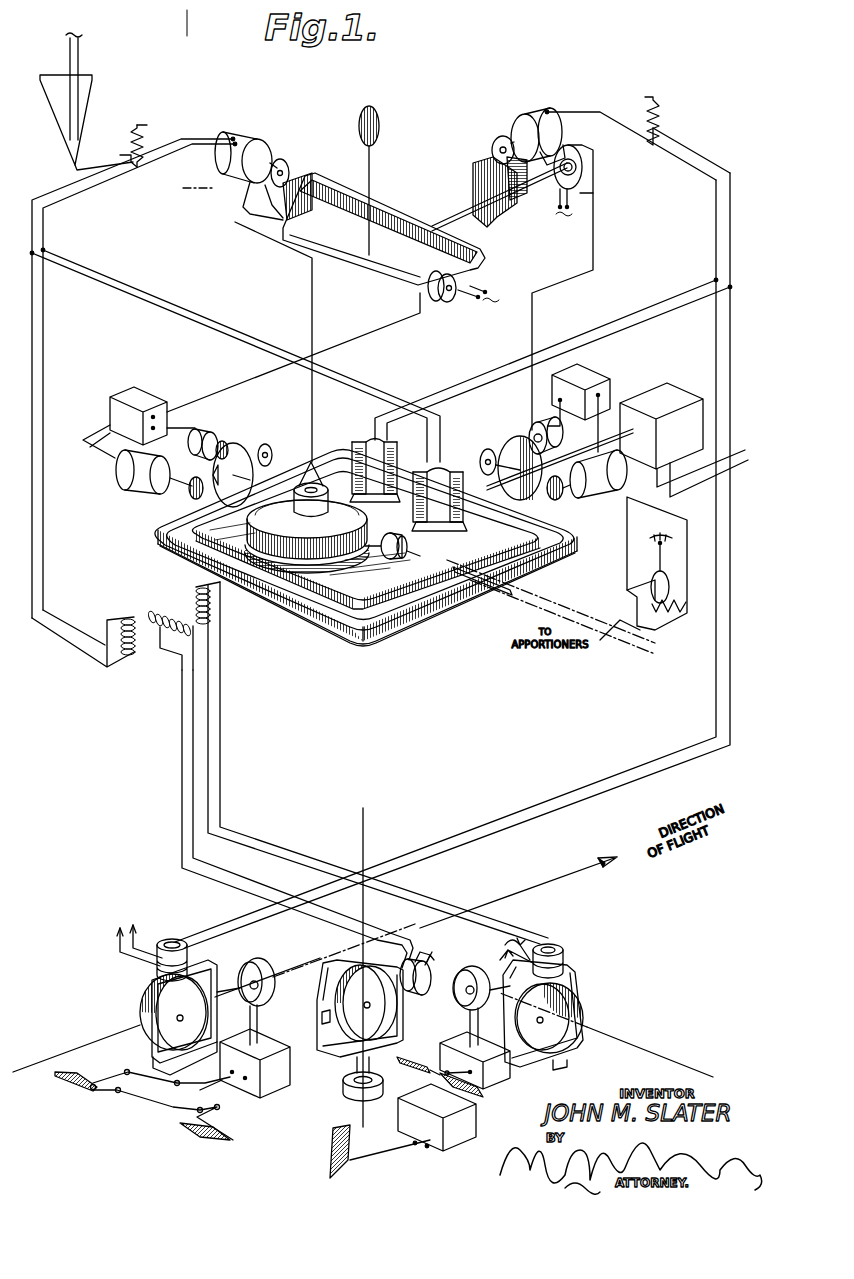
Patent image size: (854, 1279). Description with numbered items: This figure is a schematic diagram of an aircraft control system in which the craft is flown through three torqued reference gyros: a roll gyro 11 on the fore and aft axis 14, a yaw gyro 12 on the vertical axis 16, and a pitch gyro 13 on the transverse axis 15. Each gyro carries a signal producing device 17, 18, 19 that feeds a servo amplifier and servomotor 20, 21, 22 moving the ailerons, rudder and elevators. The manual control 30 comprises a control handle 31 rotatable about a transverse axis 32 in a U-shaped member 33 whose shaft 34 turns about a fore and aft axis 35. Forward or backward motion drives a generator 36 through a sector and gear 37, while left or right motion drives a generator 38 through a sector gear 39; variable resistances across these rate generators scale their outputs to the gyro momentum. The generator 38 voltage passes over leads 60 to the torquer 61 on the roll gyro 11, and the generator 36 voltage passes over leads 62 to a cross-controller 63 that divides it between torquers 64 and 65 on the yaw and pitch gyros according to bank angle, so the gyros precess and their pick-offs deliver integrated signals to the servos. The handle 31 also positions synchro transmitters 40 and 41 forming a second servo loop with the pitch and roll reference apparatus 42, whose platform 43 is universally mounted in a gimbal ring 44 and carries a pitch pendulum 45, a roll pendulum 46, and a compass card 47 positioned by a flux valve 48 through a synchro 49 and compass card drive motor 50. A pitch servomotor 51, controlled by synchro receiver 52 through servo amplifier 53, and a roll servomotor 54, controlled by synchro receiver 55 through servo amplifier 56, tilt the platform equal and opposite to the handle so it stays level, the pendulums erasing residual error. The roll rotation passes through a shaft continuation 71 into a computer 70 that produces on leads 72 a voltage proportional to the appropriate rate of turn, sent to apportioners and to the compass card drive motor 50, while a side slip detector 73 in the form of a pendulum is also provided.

The roll gyro 11 is at (145, 992).
The yaw gyro 12 is at (335, 965).
The pitch gyro 13 is at (572, 1008).
The fore and aft axis 14 is at (52, 1060).
The transverse axis 15 is at (692, 1068).
The vertical axis 16 is at (370, 908).
The signal producing device 17 is at (258, 958).
The signal producing device 18 is at (345, 1092).
The signal producing device 19 is at (468, 966).
The servo amplifier and servomotor 20 is at (272, 1092).
The servo amplifier and servomotor 21 is at (456, 1155).
The servo amplifier and servomotor 22 is at (508, 1078).
The manual control 30 is at (358, 271).
The control handle 31 is at (372, 170).
The transverse axis 32 is at (199, 190).
The U-shaped member 33 is at (398, 215).
The shaft 34 is at (487, 215).
The fore and aft axis 35 is at (585, 152).
The generator 36 is at (248, 138).
The sector and gear 37 is at (291, 172).
The generator 38 is at (530, 112).
The sector gear 39 is at (498, 140).
The synchro transmitter 40 is at (460, 290).
The synchro transmitter 41 is at (567, 147).
The pitch and roll reference apparatus 42 is at (349, 656).
The support member or platform 43 is at (408, 600).
The gimbal ring 44 is at (323, 612).
The pitch pendulum 45 is at (450, 470).
The roll pendulum 46 is at (356, 435).
The compass card 47 is at (295, 545).
The flux valve 48 is at (95, 85).
The synchro 49 is at (305, 465).
The compass card drive motor 50 is at (410, 553).
The pitch servomotor 51 is at (118, 478).
The synchro receiver 52 is at (200, 428).
The servo amplifier 53 is at (142, 390).
The roll servomotor 54 is at (610, 492).
The synchro receiver 55 is at (528, 440).
The servo amplifier 56 is at (597, 372).
The leads 60 is at (716, 226).
The torquer 61 is at (174, 940).
The leads 62 is at (35, 253).
The cross-controller 63 is at (122, 610).
The torquer 64 is at (427, 995).
The torquer 65 is at (560, 955).
The computer 70 is at (690, 420).
The continuation of gimbal bearing shaft 71 is at (625, 443).
The leads 72 is at (713, 467).
The side slip detector 73 is at (665, 572).